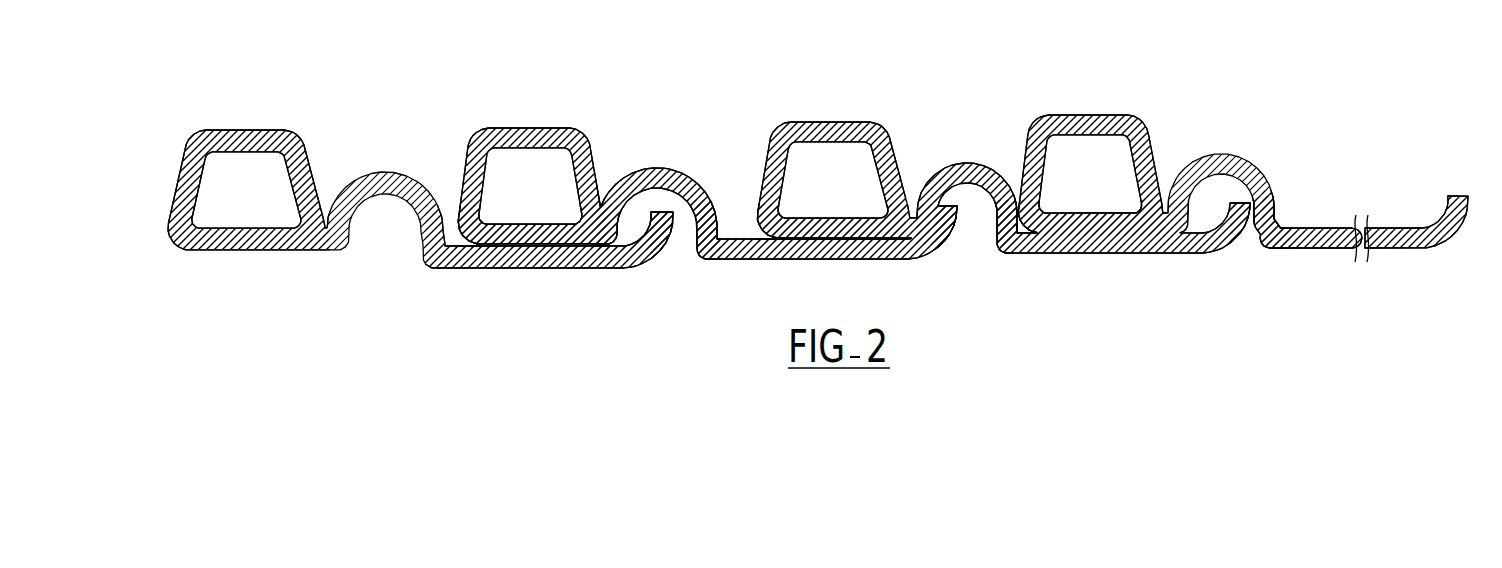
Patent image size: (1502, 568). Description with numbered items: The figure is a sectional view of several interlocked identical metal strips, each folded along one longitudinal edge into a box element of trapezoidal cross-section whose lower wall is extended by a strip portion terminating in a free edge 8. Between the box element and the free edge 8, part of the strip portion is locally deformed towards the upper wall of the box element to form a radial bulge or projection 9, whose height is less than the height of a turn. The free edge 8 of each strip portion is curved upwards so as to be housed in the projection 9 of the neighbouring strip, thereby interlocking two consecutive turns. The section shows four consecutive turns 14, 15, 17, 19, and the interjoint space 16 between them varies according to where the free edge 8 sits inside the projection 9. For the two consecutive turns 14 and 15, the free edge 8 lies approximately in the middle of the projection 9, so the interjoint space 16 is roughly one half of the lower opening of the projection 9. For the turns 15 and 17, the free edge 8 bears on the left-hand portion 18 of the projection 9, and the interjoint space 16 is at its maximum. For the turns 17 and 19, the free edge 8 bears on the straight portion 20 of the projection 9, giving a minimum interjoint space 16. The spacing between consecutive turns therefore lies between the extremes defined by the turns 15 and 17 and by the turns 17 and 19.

The free edge 8 is at (660, 213).
The radial bulge or projection 9 is at (665, 160).
The turn 14 is at (259, 118).
The turn 15 is at (535, 117).
The interjoint space 16 is at (681, 231).
The turn 17 is at (833, 108).
The left-hand portion of the projection 18 is at (920, 207).
The turn 19 is at (1105, 106).
The straight portion of the projection 20 is at (1279, 202).